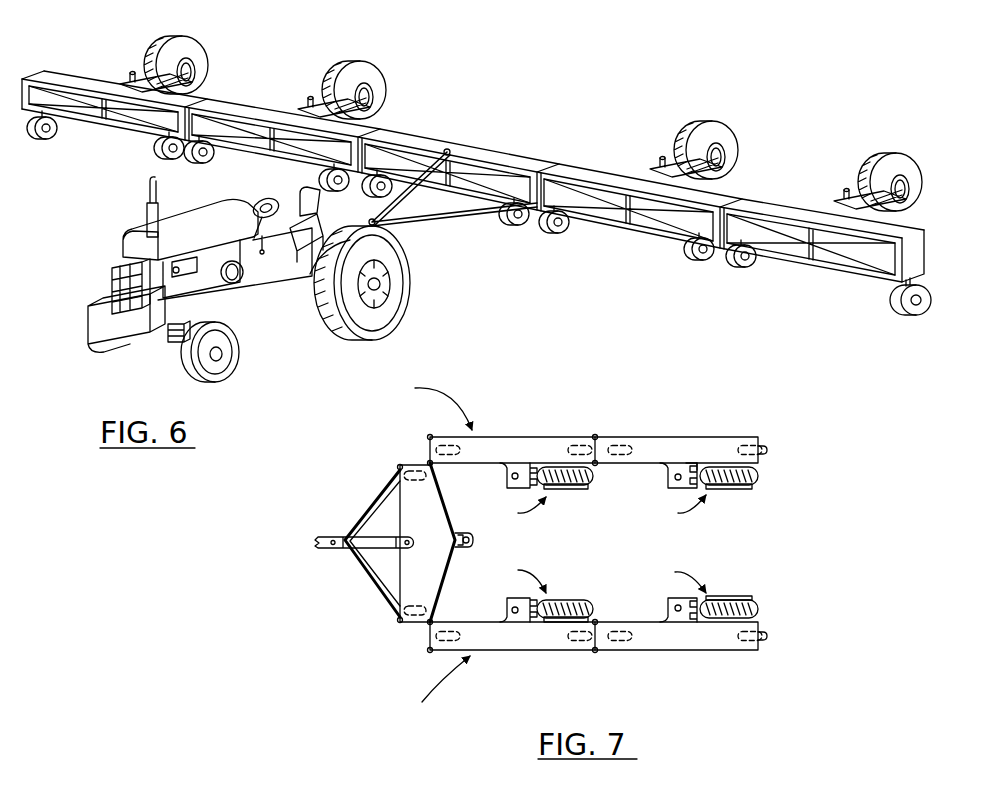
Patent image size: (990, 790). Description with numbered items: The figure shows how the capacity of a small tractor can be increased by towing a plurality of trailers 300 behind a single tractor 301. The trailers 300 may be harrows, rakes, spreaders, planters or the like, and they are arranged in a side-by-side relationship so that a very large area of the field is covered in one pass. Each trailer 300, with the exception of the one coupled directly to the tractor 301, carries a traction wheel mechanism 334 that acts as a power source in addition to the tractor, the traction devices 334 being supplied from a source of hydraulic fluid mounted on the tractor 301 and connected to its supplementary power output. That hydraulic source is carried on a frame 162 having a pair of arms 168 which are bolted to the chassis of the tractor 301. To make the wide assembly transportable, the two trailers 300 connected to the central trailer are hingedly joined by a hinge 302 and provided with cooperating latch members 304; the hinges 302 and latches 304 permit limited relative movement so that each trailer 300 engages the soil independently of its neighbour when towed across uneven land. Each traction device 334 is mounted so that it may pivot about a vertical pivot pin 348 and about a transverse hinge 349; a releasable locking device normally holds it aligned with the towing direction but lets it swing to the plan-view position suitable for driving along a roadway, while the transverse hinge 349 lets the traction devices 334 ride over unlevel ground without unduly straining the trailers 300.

In FIG. 6, the trailers 300 is at (85, 80).
In FIG. 7, the trailers 300 is at (512, 448).
In FIG. 6, the tractor 301 is at (278, 320).
In FIG. 6, the traction wheel mechanism 334 is at (200, 55).
In FIG. 7, the traction wheel mechanism 334 is at (588, 482).
In FIG. 6, the frame 162 is at (123, 337).
In FIG. 6, the arms 168 is at (171, 343).
In FIG. 7, the hinge 302 is at (430, 463).
In FIG. 7, the latch members 304 is at (430, 436).
In FIG. 7, the vertical pivot pin 348 is at (516, 477).
In FIG. 7, the transverse hinge 349 is at (697, 465).